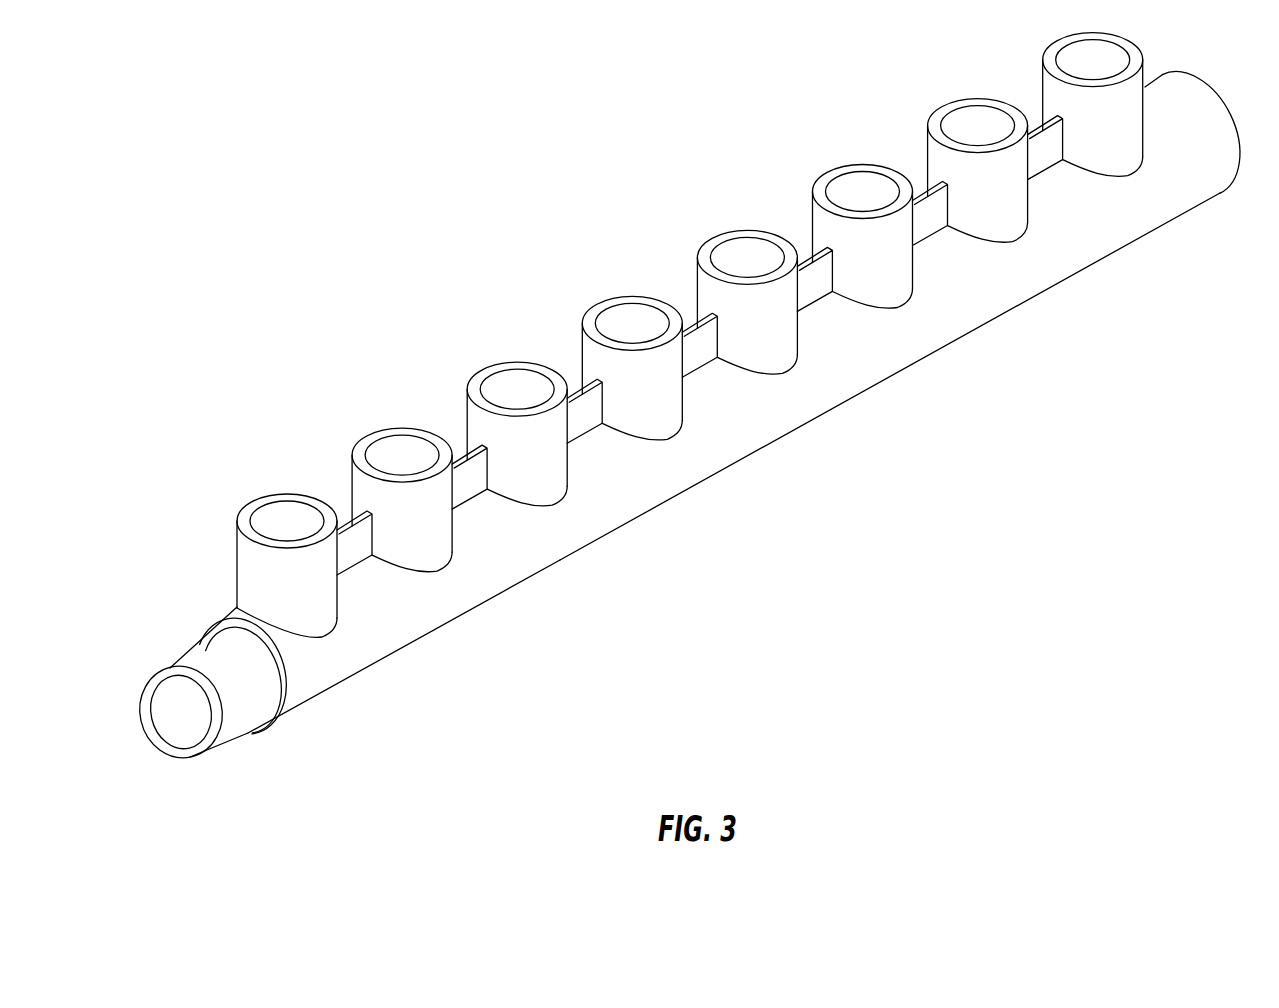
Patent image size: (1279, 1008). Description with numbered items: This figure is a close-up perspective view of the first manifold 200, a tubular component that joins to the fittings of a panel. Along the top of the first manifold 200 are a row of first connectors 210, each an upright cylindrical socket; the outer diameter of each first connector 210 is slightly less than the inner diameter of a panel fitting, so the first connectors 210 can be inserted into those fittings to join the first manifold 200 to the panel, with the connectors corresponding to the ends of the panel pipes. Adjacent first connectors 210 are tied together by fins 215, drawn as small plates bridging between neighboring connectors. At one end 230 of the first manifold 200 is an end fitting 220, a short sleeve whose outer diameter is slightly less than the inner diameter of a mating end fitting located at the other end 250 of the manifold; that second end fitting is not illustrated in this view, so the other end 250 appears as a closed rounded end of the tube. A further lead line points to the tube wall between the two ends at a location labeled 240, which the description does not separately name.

The first manifold 200 is at (368, 232).
The first connectors 210 is at (256, 572).
The fins 215 is at (468, 478).
The end fitting 220 is at (191, 666).
The end 230 is at (314, 711).
The tube body 240 is at (754, 462).
The other end 250 is at (1206, 203).